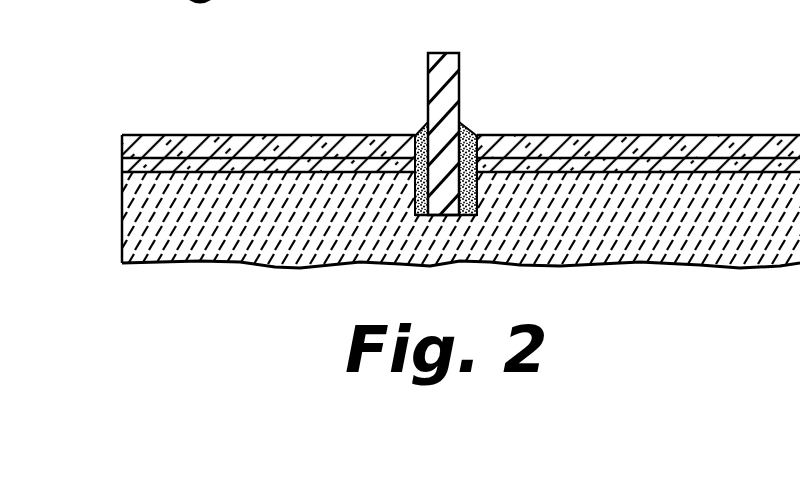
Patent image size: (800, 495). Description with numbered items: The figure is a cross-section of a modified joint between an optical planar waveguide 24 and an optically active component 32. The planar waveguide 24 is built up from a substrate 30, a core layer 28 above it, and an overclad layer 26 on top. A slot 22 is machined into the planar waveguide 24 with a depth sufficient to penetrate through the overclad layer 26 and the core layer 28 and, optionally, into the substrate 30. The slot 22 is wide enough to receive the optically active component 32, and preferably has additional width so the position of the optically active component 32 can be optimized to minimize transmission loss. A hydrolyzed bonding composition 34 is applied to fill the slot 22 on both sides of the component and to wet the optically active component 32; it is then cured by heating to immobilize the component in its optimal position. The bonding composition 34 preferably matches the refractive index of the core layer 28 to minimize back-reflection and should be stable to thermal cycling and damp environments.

The slot 22 is at (443, 217).
The planar waveguide 24 is at (112, 224).
The overclad layer 26 is at (681, 136).
The core layer 28 is at (302, 156).
The substrate 30 is at (272, 270).
The optically active component 32 is at (441, 53).
The bonding composition 34 is at (466, 131).